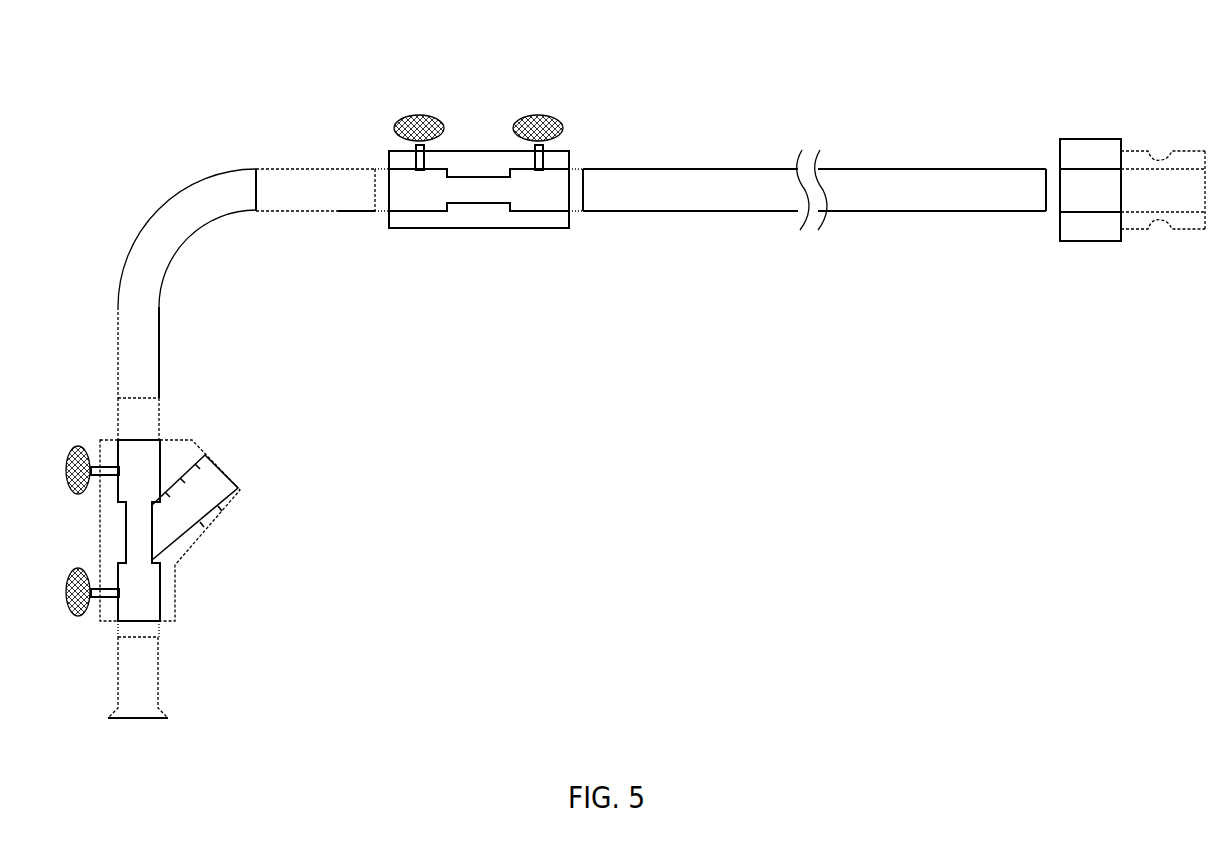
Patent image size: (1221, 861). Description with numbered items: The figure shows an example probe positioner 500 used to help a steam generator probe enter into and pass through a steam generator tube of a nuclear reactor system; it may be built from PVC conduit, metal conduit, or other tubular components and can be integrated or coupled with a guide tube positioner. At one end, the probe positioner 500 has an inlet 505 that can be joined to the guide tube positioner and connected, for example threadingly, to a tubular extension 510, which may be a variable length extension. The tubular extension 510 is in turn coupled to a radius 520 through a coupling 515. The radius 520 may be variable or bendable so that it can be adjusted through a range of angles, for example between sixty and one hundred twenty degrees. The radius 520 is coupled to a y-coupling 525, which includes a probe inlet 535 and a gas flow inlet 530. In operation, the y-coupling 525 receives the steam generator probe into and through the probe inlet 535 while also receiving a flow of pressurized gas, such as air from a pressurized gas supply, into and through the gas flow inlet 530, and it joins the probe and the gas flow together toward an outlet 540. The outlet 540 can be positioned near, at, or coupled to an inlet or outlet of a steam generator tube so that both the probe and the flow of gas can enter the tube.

The probe positioner 500 is at (143, 47).
The inlet 505 is at (1090, 139).
The tubular extension 510 is at (906, 169).
The coupling 515 is at (490, 150).
The radius 520 is at (150, 222).
The y-coupling 525 is at (178, 577).
The gas flow inlet 530 is at (222, 470).
The probe inlet 535 is at (138, 440).
The outlet 540 is at (160, 672).